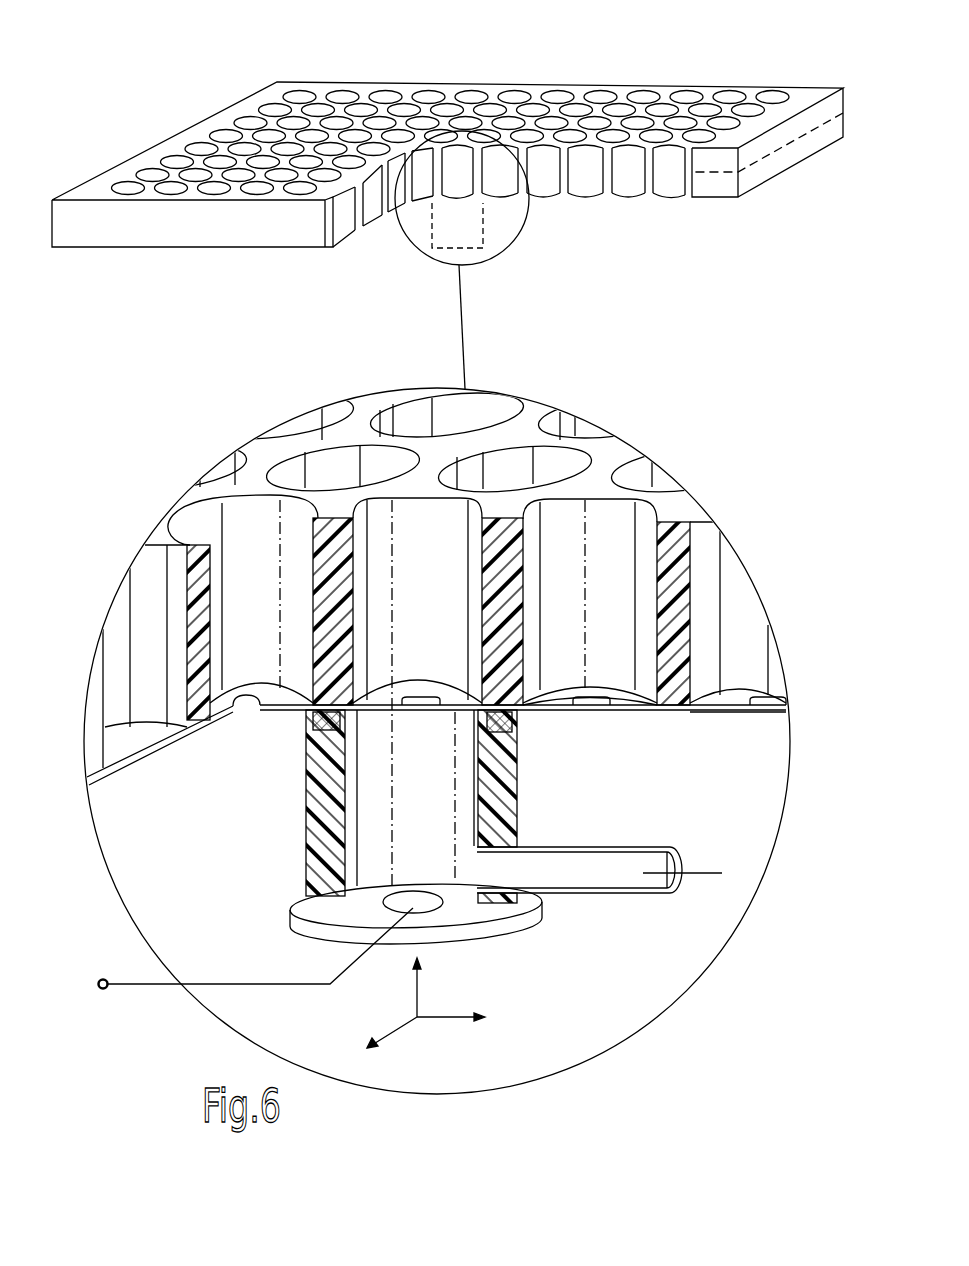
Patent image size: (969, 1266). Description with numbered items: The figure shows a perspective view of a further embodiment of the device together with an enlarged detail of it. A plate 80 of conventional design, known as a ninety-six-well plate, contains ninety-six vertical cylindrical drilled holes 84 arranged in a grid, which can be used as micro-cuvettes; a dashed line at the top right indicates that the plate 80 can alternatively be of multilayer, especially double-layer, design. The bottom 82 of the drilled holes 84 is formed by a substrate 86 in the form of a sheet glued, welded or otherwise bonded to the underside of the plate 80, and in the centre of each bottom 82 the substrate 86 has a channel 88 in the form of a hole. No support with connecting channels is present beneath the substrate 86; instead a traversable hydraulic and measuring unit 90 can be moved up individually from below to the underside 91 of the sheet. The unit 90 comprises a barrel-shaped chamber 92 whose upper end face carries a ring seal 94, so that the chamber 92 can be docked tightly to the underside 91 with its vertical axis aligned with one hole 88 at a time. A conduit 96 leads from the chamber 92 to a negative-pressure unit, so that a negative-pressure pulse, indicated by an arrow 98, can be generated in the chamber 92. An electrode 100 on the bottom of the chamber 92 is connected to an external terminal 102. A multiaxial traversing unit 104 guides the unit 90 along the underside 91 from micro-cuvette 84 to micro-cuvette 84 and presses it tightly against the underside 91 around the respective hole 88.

The plate 80 is at (772, 163).
The bottom 82 is at (566, 693).
The drilled holes 84 is at (773, 97).
The substrate 86 is at (717, 717).
The channel 88 is at (596, 713).
The hydraulic and measuring unit 90 is at (440, 225).
The underside 91 is at (647, 720).
The chamber 92 is at (316, 773).
The ring seal 94 is at (310, 718).
The conduit 96 is at (568, 873).
The arrow 98 is at (693, 868).
The electrode 100 is at (410, 905).
The external terminal 102 is at (102, 989).
The multiaxial traversing unit 104 is at (440, 1008).